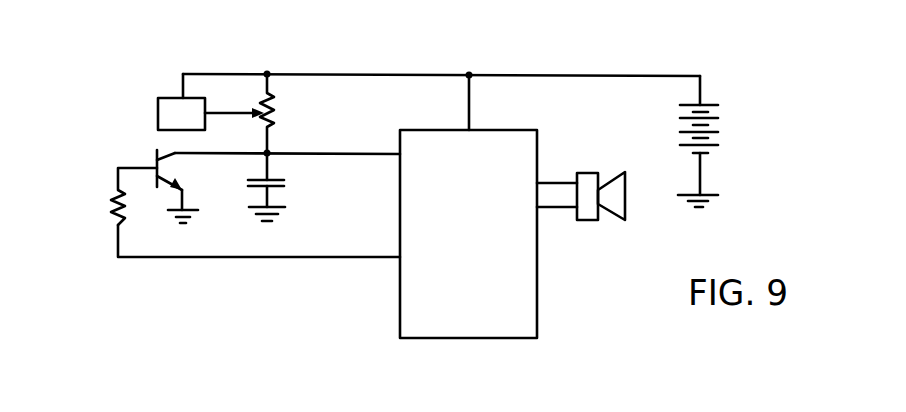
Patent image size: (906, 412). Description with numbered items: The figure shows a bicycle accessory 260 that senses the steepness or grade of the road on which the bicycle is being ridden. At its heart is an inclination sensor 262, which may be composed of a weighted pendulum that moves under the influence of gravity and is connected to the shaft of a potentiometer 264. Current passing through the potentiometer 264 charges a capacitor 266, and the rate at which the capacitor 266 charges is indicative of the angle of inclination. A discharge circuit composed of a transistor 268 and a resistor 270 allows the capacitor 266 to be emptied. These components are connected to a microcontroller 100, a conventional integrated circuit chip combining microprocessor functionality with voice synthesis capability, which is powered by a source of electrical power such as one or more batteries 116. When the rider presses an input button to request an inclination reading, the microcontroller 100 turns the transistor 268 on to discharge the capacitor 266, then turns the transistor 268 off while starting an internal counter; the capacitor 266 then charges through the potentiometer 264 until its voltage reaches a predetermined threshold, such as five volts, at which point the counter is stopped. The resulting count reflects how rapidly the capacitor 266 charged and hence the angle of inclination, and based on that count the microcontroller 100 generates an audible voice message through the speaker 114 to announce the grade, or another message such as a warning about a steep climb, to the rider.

The bicycle accessory 260 is at (370, 150).
The inclination sensor 262 is at (158, 118).
The potentiometer 264 is at (280, 112).
The capacitor 266 is at (275, 188).
The transistor 268 is at (176, 158).
The resistor 270 is at (110, 207).
The microcontroller 100 is at (537, 311).
The speaker 114 is at (590, 220).
The battery 116 is at (708, 145).